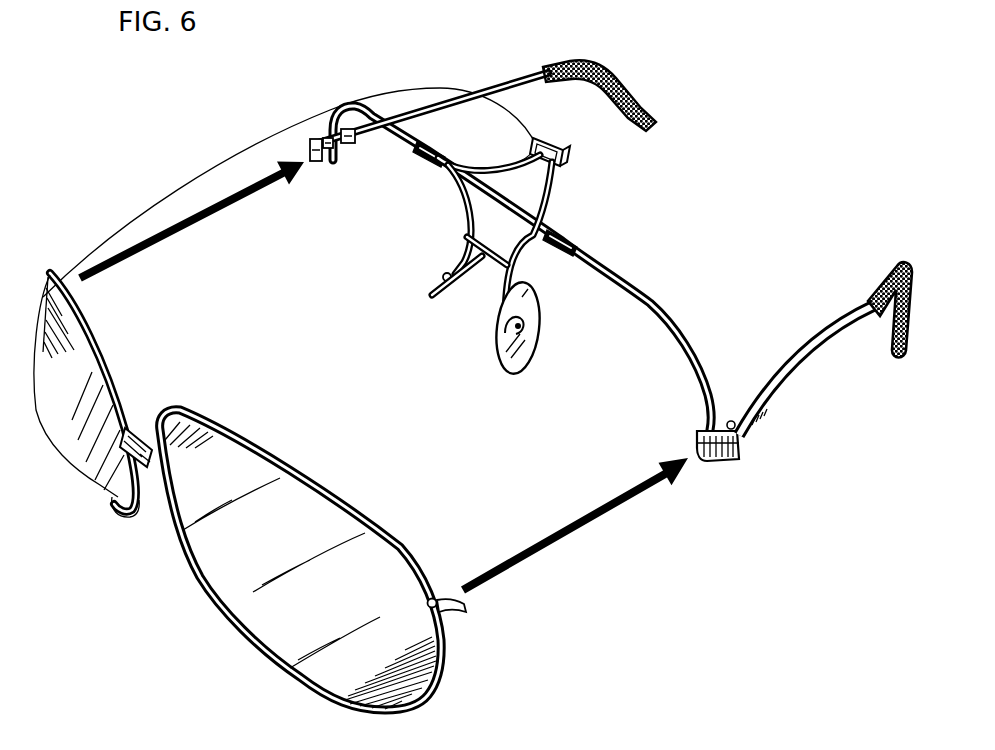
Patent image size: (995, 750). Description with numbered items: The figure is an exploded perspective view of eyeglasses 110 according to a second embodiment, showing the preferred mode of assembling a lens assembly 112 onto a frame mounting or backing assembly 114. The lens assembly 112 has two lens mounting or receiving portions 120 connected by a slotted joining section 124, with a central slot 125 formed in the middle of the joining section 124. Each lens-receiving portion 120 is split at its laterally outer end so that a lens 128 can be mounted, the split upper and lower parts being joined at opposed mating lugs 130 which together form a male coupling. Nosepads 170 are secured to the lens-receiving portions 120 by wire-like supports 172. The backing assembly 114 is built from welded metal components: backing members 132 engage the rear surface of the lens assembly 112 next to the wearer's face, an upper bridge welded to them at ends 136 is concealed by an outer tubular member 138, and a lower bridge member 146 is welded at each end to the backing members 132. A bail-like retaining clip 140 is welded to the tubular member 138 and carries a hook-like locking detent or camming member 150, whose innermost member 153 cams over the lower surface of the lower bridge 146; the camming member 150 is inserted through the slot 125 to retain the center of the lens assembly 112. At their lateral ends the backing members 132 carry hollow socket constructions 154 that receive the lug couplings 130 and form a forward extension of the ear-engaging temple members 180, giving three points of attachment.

The eyeglasses 110 is at (720, 222).
The lens assembly 112 is at (407, 534).
The frame mounting or backing assembly 114 is at (484, 82).
The lens mounting or receiving portions 120 is at (90, 331).
The slotted joining section 124 is at (117, 450).
The central slot 125 is at (138, 520).
The lens 128 is at (258, 607).
The mating lugs 130 is at (453, 613).
The backing members 132 is at (399, 140).
The ends 136 is at (428, 152).
The outer tubular member 138 is at (456, 196).
The bail-like retaining clip 140 is at (548, 191).
The lower bridge member 146 is at (470, 272).
The locking detent or camming member 150 is at (546, 132).
The innermost member 153 is at (560, 140).
The socket constructions 154 is at (310, 150).
The nosepads 170 is at (519, 372).
The wire-like supports 172 is at (523, 313).
The temple members 180 is at (796, 398).